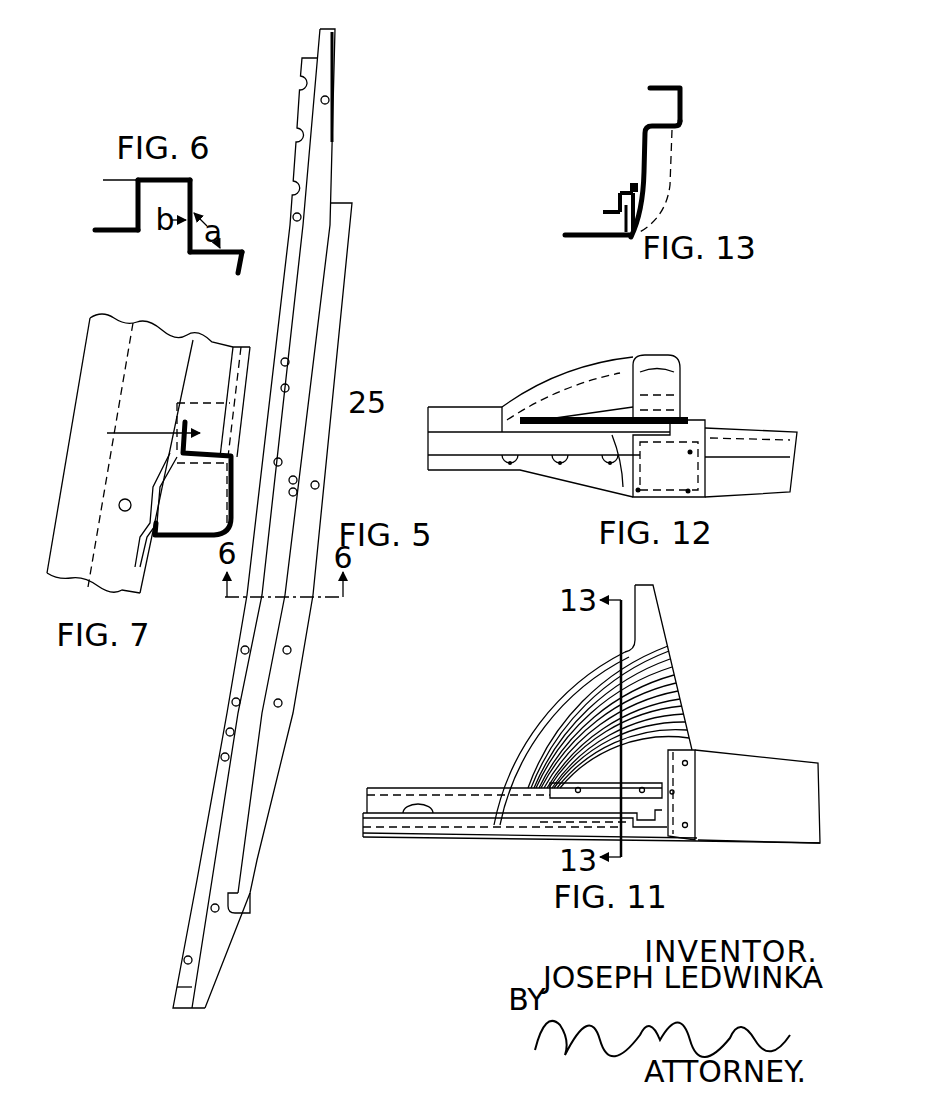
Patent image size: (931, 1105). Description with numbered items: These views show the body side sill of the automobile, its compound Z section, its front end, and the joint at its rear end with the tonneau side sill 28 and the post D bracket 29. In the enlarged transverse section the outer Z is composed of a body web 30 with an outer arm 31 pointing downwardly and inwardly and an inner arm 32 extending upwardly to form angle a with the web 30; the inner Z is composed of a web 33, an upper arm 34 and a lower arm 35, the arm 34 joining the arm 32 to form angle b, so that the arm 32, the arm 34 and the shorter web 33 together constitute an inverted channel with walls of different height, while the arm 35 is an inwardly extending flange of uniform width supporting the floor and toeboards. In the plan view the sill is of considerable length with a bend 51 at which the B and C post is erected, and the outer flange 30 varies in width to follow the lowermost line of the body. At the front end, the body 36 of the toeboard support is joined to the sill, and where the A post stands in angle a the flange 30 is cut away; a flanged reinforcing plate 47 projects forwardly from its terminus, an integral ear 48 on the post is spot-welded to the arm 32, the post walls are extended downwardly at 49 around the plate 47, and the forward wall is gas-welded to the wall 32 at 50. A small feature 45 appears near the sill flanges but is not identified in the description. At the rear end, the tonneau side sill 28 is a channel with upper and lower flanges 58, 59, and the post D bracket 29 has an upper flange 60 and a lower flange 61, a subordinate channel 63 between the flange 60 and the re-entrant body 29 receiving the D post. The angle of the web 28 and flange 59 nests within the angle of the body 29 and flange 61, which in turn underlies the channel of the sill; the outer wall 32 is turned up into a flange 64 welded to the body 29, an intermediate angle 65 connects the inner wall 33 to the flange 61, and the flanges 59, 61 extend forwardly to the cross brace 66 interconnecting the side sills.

In FIG. 11, the tonneau side sill 28 is at (757, 796).
In FIG. 13, the post D bracket 29 is at (647, 153).
In FIG. 12, the post D bracket 29 is at (668, 390).
In FIG. 11, the post D bracket 29 is at (662, 713).
In FIG. 5, the body web of outer Z section 30 is at (290, 627).
In FIG. 6, the body web of outer Z section 30 is at (237, 251).
In FIG. 7, the body web of outer Z section 30 is at (215, 380).
In FIG. 12, the body web of outer Z section 30 is at (443, 423).
In FIG. 5, the outer arm of outer Z section 31 is at (300, 684).
In FIG. 6, the outer arm of outer Z section 31 is at (243, 263).
In FIG. 5, the inner arm of outer Z section 32 is at (266, 742).
In FIG. 6, the inner arm of outer Z section 32 is at (193, 200).
In FIG. 11, the inner arm of outer Z section 32 is at (466, 818).
In FIG. 5, the web of inner Z section 33 is at (219, 828).
In FIG. 6, the web of inner Z section 33 is at (137, 193).
In FIG. 13, the web of inner Z section 33 is at (618, 208).
In FIG. 11, the web of inner Z section 33 is at (397, 800).
In FIG. 5, the upper arm of inner Z section 34 is at (263, 662).
In FIG. 6, the upper arm of inner Z section 34 is at (150, 178).
In FIG. 7, the upper arm of inner Z section 34 is at (153, 343).
In FIG. 13, the upper arm of inner Z section 34 is at (620, 192).
In FIG. 12, the upper arm of inner Z section 34 is at (447, 445).
In FIG. 11, the upper arm of inner Z section 34 is at (459, 789).
In FIG. 5, the lower arm of inner Z section 35 is at (223, 780).
In FIG. 6, the lower arm of inner Z section 35 is at (116, 234).
In FIG. 7, the lower arm of inner Z section 35 is at (92, 390).
In FIG. 13, the lower arm of inner Z section 35 is at (604, 212).
In FIG. 12, the lower arm of inner Z section 35 is at (480, 462).
In FIG. 11, the lower arm of inner Z section 35 is at (395, 820).
In FIG. 5, the main body of toeboard support 36 is at (210, 941).
In FIG. 11, the bulge 45 is at (400, 812).
In FIG. 5, the flanged reinforcing plate 47 is at (240, 906).
In FIG. 7, the flanged reinforcing plate 47 is at (178, 505).
In FIG. 7, the integral ear 48 is at (62, 578).
In FIG. 7, the extended walls of post end 49 is at (212, 534).
In FIG. 7, the gas weld 50 is at (164, 540).
In FIG. 5, the bend in the sill 51 is at (315, 475).
In FIG. 12, the upper flange of tonneau side sill 58 is at (755, 450).
In FIG. 11, the upper flange of tonneau side sill 58 is at (733, 755).
In FIG. 12, the lower flange of tonneau side sill 59 is at (765, 477).
In FIG. 11, the lower flange of tonneau side sill 59 is at (765, 843).
In FIG. 13, the upper flange of post D bracket 60 is at (665, 88).
In FIG. 11, the upper flange of post D bracket 60 is at (557, 705).
In FIG. 13, the lower flange of post D bracket 61 is at (590, 238).
In FIG. 12, the lower flange of post D bracket 61 is at (597, 476).
In FIG. 11, the lower flange of post D bracket 61 is at (533, 837).
In FIG. 13, the subordinate channel section 63 is at (676, 107).
In FIG. 12, the subordinate channel section 63 is at (667, 367).
In FIG. 11, the subordinate channel section 63 is at (593, 698).
In FIG. 5, the upwardly extending flange 64 is at (335, 97).
In FIG. 13, the upwardly extending flange 64 is at (632, 184).
In FIG. 12, the upwardly extending flange 64 is at (633, 453).
In FIG. 11, the upwardly extending flange 64 is at (605, 790).
In FIG. 13, the intermediate angle 65 is at (622, 224).
In FIG. 11, the intermediate angle 65 is at (565, 828).
In FIG. 12, the cross brace 66 is at (556, 405).